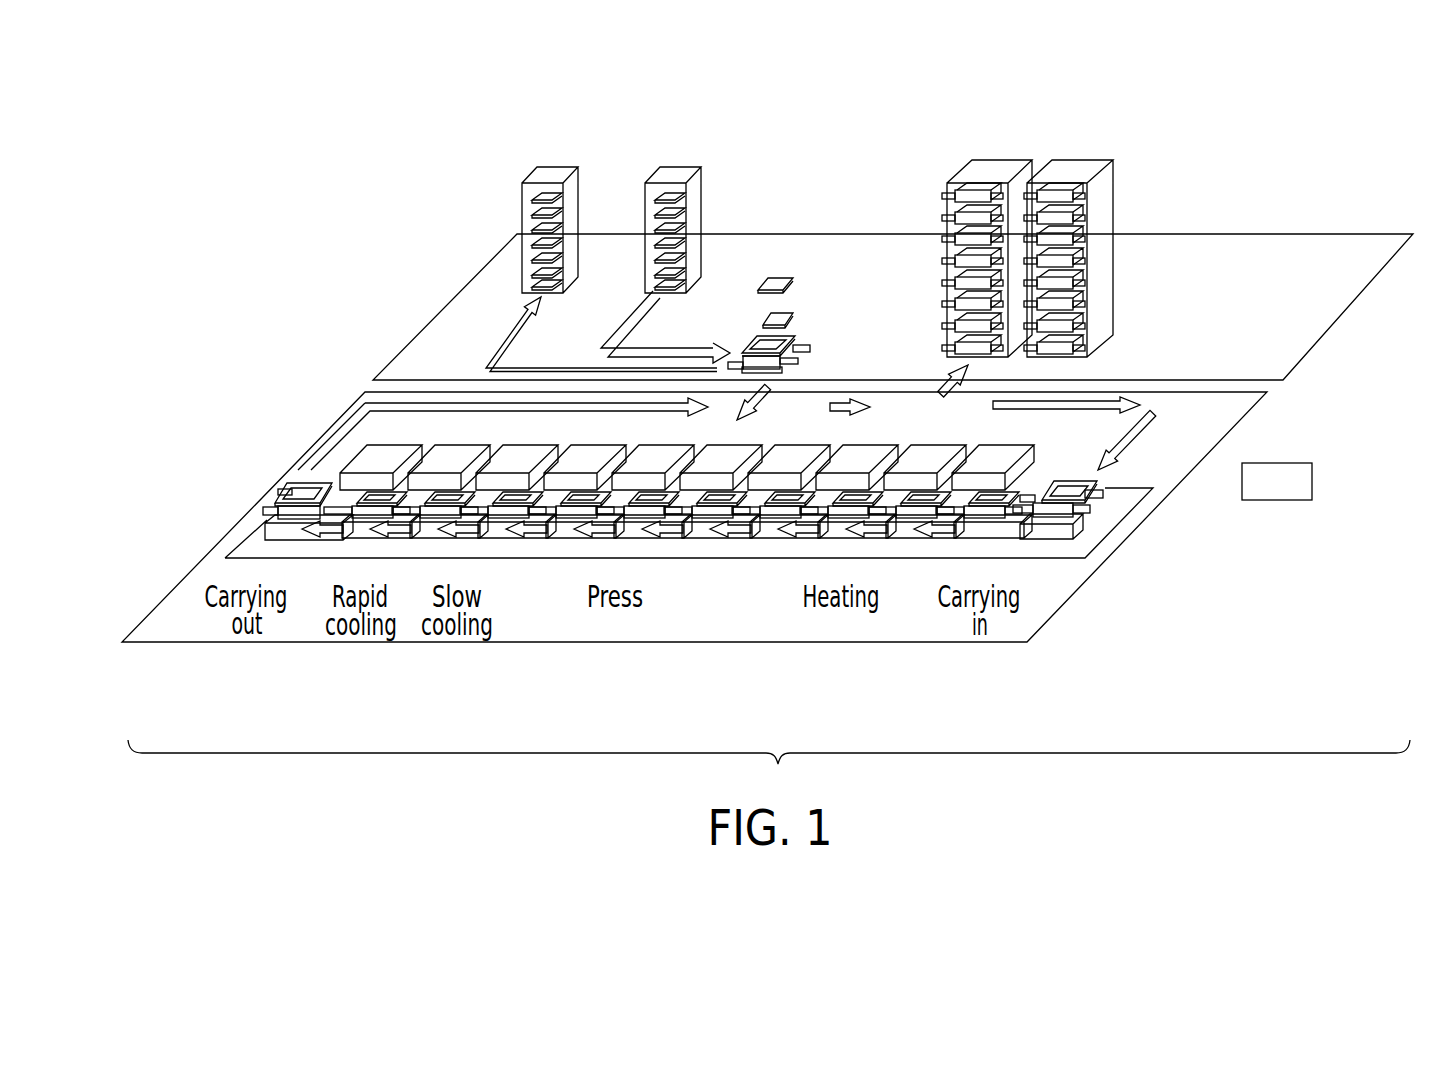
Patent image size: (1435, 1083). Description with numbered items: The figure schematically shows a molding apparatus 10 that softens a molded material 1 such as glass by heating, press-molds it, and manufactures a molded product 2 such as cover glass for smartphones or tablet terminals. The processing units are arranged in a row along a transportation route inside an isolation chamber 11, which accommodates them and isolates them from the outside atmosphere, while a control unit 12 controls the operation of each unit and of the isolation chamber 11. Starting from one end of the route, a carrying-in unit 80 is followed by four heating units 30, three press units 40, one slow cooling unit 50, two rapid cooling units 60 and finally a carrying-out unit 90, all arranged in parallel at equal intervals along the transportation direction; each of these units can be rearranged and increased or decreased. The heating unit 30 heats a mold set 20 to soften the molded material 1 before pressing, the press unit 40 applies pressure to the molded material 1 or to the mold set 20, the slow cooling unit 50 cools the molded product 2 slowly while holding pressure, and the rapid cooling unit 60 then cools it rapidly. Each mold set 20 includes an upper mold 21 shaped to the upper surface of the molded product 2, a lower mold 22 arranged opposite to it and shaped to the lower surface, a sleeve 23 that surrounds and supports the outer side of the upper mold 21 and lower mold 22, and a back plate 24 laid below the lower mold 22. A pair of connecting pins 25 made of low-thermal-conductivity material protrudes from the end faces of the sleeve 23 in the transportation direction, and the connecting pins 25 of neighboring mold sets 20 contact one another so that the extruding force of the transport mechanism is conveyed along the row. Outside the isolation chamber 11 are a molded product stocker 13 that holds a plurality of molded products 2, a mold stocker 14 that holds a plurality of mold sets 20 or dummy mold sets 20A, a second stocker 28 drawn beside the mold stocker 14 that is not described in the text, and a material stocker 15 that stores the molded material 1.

The molding apparatus 10 is at (224, 406).
The isolation chamber 11 is at (978, 643).
The control unit 12 is at (1312, 481).
The molded product stocker 13 is at (537, 167).
The molded product 2 is at (558, 183).
The material stocker 15 is at (660, 167).
The molded material 1 is at (681, 183).
The mold stocker 14 is at (1032, 161).
The carrier stocker 28 is at (1072, 170).
The dummy mold set 20A is at (1110, 192).
The mold set 20 is at (797, 338).
The upper mold 21 is at (758, 290).
The lower mold 22 is at (811, 348).
The sleeve 23 is at (744, 356).
The back plate 24 is at (776, 376).
The connecting pin 25 is at (798, 361).
The rapid cooling unit 60 is at (374, 446).
The slow cooling unit 50 is at (520, 447).
The press unit 40 is at (594, 524).
The heating unit 30 is at (736, 538).
The carrying-out unit 90 is at (270, 510).
The carrying-in unit 80 is at (1060, 538).